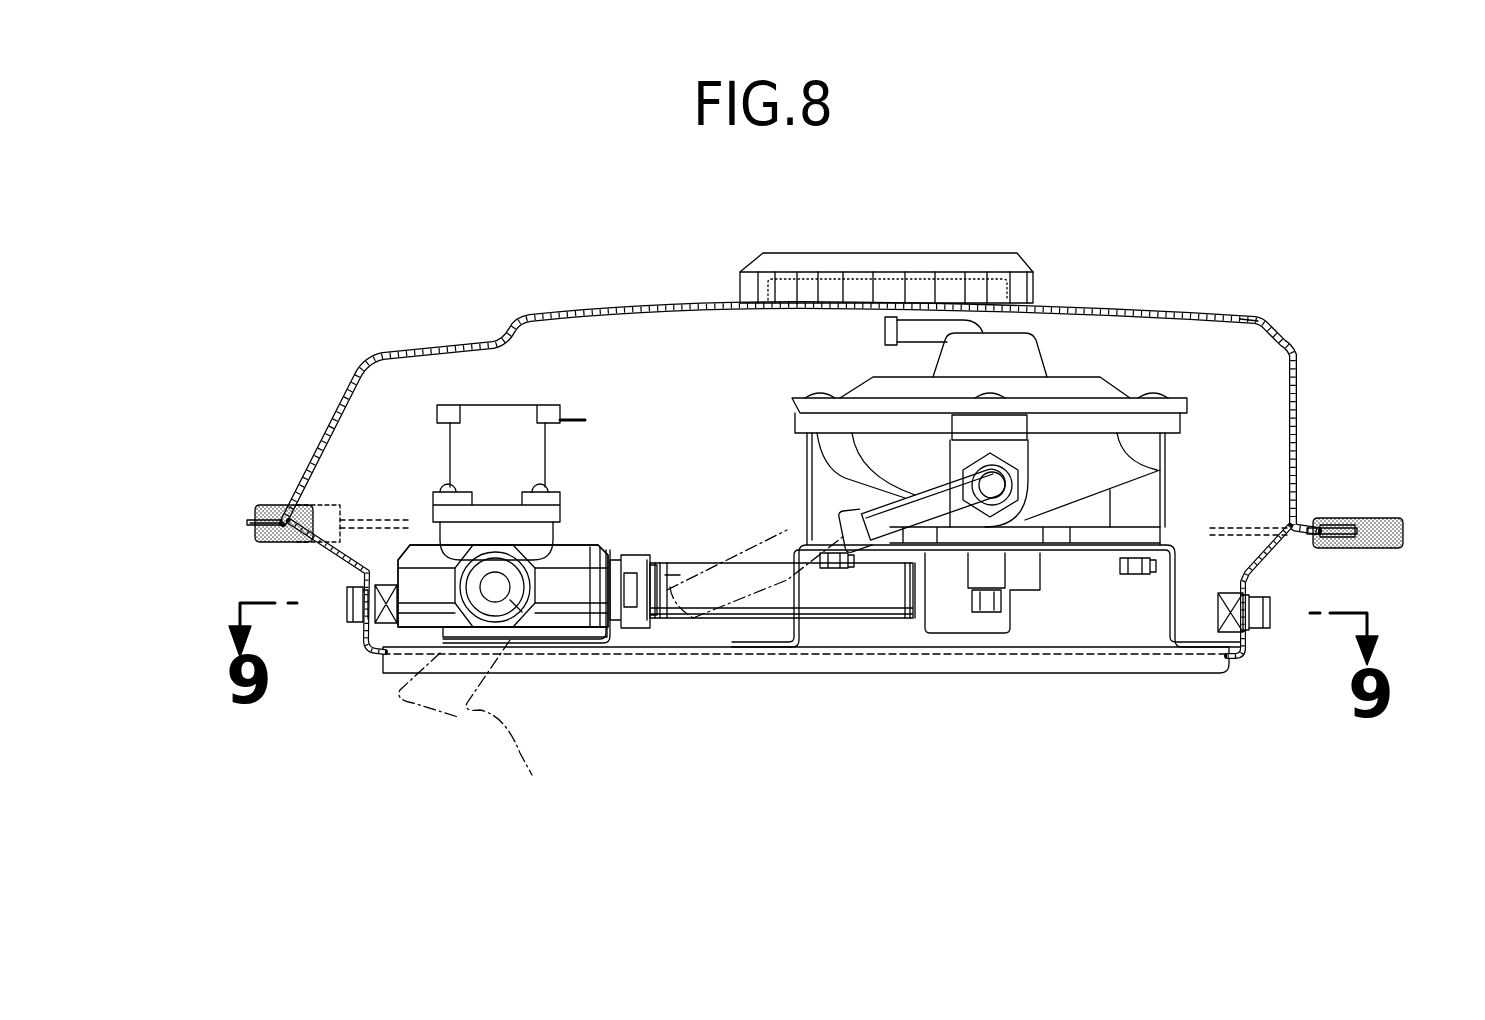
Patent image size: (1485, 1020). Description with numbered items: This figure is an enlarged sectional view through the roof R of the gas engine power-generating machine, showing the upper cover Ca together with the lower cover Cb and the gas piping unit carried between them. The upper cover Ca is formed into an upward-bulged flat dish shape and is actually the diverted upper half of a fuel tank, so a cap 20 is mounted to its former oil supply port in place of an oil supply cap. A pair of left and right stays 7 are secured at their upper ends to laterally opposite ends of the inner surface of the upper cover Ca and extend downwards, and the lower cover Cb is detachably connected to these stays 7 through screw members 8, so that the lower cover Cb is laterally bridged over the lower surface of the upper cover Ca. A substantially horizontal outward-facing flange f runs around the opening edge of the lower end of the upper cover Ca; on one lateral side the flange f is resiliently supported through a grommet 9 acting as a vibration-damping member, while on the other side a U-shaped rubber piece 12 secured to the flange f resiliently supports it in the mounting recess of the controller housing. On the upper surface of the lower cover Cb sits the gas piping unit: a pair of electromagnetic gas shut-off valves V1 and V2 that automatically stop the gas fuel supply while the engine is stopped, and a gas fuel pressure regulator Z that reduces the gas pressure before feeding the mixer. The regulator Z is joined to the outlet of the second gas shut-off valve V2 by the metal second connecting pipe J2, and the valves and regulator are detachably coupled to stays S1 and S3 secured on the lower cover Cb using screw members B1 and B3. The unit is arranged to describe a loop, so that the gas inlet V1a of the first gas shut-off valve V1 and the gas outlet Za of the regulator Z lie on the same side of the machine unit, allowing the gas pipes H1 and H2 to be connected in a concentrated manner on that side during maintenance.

The roof R is at (527, 314).
The cap 20 is at (940, 266).
The upper cover Ca is at (1205, 314).
The gas fuel pressure regulator Z is at (1087, 377).
The gas outlet Za is at (918, 500).
The first gas shut-off valve V1 is at (572, 545).
The second gas shut-off valve V2 is at (503, 586).
The gas inlet V1a is at (520, 612).
The stay S1 is at (590, 620).
The stay S3 is at (1178, 607).
The screw member B1 is at (658, 612).
The screw member B3 is at (838, 568).
The second connecting pipe J2 is at (688, 567).
The gas pipe H2 is at (787, 533).
The gas pipe H1 is at (532, 775).
The lower cover Cb is at (1142, 668).
The stay 7 is at (340, 558).
The screw member 8 is at (358, 610).
The grommet 9 is at (265, 507).
The flange f is at (240, 525).
The rubber piece 12 is at (1382, 520).